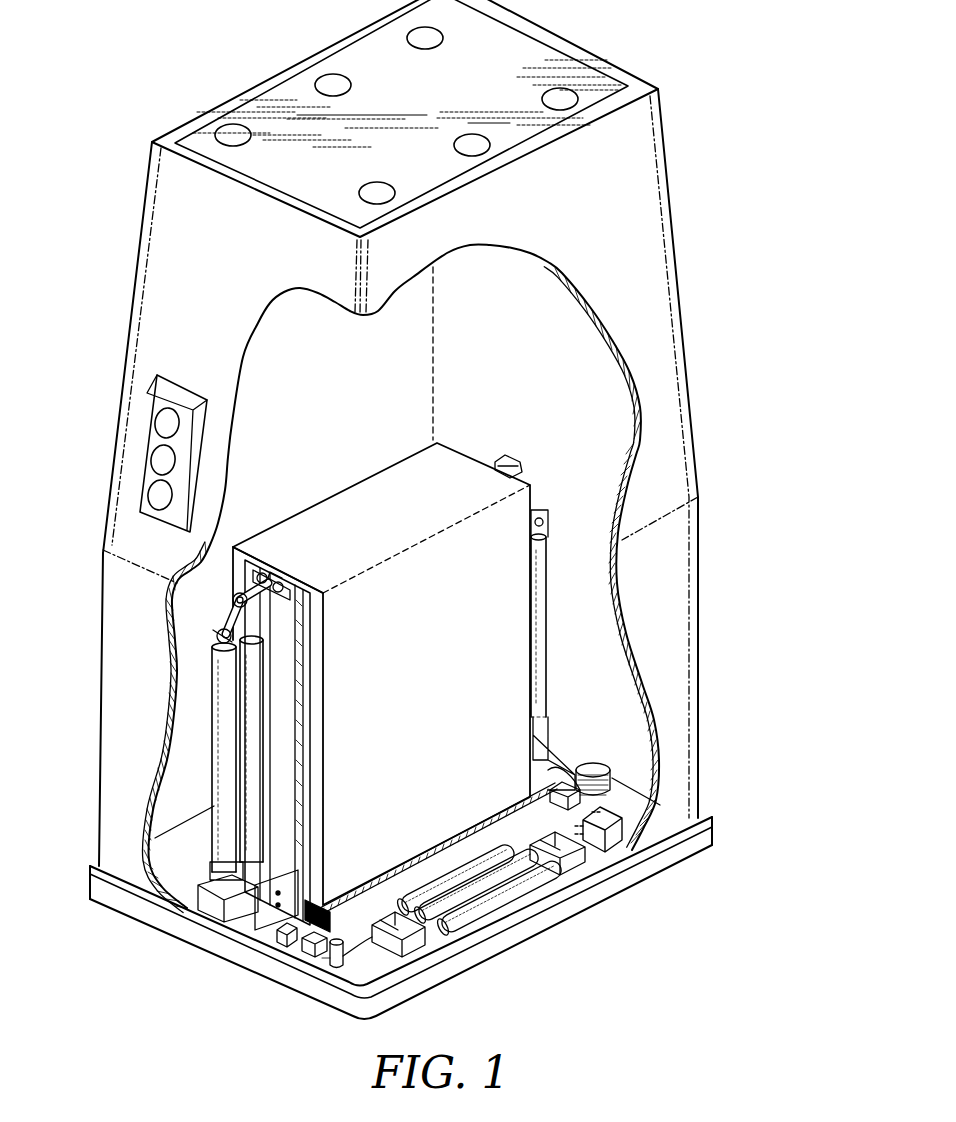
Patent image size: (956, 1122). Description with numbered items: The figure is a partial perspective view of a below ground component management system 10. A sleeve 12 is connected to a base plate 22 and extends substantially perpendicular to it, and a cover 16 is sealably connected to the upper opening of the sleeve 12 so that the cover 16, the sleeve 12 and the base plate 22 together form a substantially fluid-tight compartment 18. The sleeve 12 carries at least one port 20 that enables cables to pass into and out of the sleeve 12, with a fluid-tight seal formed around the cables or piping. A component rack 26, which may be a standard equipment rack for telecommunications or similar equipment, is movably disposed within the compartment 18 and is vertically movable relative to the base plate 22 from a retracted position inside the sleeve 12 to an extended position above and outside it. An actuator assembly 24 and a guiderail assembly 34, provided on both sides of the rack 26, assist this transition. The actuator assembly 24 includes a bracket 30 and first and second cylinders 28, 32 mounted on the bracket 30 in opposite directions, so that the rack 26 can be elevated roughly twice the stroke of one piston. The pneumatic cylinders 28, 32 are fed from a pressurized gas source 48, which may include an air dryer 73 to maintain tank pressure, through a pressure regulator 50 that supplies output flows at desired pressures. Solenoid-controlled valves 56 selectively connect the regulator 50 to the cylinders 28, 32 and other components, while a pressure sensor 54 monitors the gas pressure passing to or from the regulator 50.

The component management system 10 is at (735, 305).
The sleeve 12 is at (700, 621).
The cover 16 is at (483, 92).
The substantially fluid-tight compartment 18 is at (391, 401).
The port 20 is at (166, 423).
The base plate 22 is at (713, 830).
The actuator assembly 24 is at (201, 735).
The component rack 26 is at (426, 649).
The first cylinder 28 is at (216, 780).
The bracket 30 is at (232, 616).
The second cylinder 32 is at (258, 760).
The guiderail assembly 34 is at (268, 578).
The pressurized gas source 48 is at (477, 873).
The pressure regulator 50 is at (300, 948).
The pressure sensor 54 is at (331, 962).
The solenoid-controlled valve 56 is at (275, 935).
The air dryer 73 is at (612, 836).